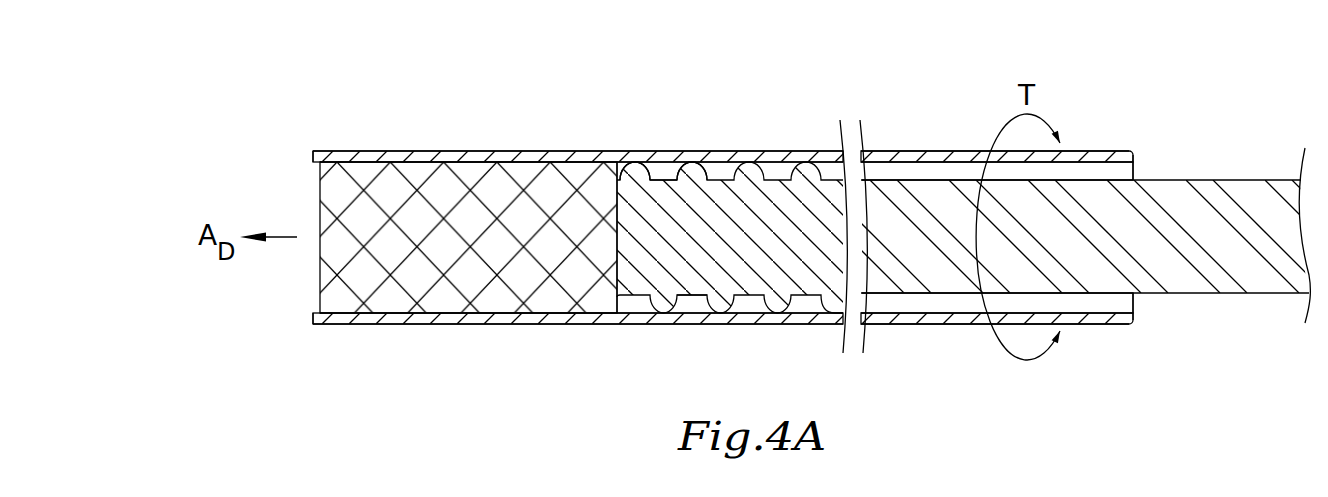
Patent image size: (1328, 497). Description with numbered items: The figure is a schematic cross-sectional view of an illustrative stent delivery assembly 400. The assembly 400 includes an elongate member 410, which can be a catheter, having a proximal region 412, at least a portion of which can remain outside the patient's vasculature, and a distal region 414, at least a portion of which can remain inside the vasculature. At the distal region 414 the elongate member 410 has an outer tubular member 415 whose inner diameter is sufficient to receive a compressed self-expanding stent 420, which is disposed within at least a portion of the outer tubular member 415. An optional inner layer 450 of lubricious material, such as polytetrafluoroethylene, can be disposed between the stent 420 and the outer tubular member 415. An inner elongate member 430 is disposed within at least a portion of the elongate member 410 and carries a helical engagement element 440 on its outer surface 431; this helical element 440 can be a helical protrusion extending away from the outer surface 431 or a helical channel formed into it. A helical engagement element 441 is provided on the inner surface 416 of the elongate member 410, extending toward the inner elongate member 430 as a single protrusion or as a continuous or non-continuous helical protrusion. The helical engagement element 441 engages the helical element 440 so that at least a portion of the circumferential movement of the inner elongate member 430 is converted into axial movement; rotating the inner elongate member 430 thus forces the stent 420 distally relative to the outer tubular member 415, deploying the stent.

The stent delivery assembly 400 is at (315, 105).
The elongate member 410 is at (806, 120).
The proximal region 412 is at (1138, 123).
The distal region 414 is at (490, 104).
The outer tubular member 415 is at (622, 162).
The inner surface 416 is at (670, 178).
The self-expanding stent 420 is at (494, 275).
The inner elongate member 430 is at (1168, 280).
The outer surface 431 is at (700, 297).
The helical engagement element 440 is at (724, 308).
The helical engagement element 441 is at (702, 123).
The inner layer 450 is at (338, 315).